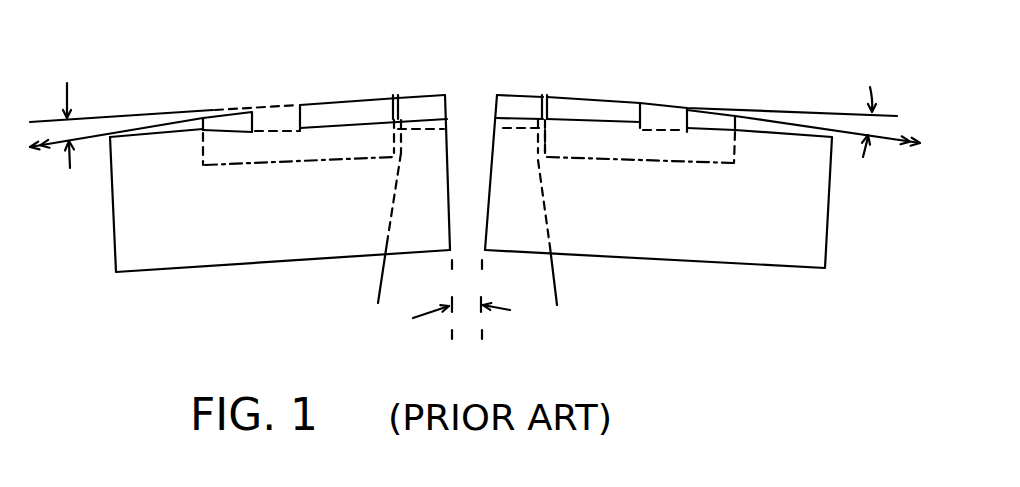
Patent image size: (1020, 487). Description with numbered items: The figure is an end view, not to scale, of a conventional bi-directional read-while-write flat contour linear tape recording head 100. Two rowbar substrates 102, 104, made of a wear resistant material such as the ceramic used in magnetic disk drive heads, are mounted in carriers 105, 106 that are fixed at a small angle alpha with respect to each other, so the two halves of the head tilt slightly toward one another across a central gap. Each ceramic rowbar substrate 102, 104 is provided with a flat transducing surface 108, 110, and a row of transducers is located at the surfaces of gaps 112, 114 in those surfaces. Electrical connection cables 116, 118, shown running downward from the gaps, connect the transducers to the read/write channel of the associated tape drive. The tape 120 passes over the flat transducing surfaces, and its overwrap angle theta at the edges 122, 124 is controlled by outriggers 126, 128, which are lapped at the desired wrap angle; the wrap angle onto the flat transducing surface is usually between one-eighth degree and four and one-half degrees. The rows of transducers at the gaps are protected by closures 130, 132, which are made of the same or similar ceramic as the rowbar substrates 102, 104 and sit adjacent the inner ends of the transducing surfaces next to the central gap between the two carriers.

The bi-directional read-while-write flat contour head 100 is at (475, 212).
The rowbar substrate 102 is at (265, 170).
The rowbar substrate 104 is at (640, 172).
The carrier 105 is at (115, 253).
The carrier 106 is at (832, 233).
The flat transducing surface 108 is at (338, 101).
The flat transducing surface 110 is at (593, 97).
The gap 112 is at (395, 94).
The gap 114 is at (542, 94).
The electrical connection cable 116 is at (380, 287).
The electrical connection cable 118 is at (563, 288).
The tape 120 is at (55, 150).
The edge 122 is at (300, 102).
The edge 124 is at (640, 102).
The outrigger 126 is at (223, 110).
The outrigger 128 is at (708, 108).
The closure 130 is at (418, 92).
The closure 132 is at (507, 93).